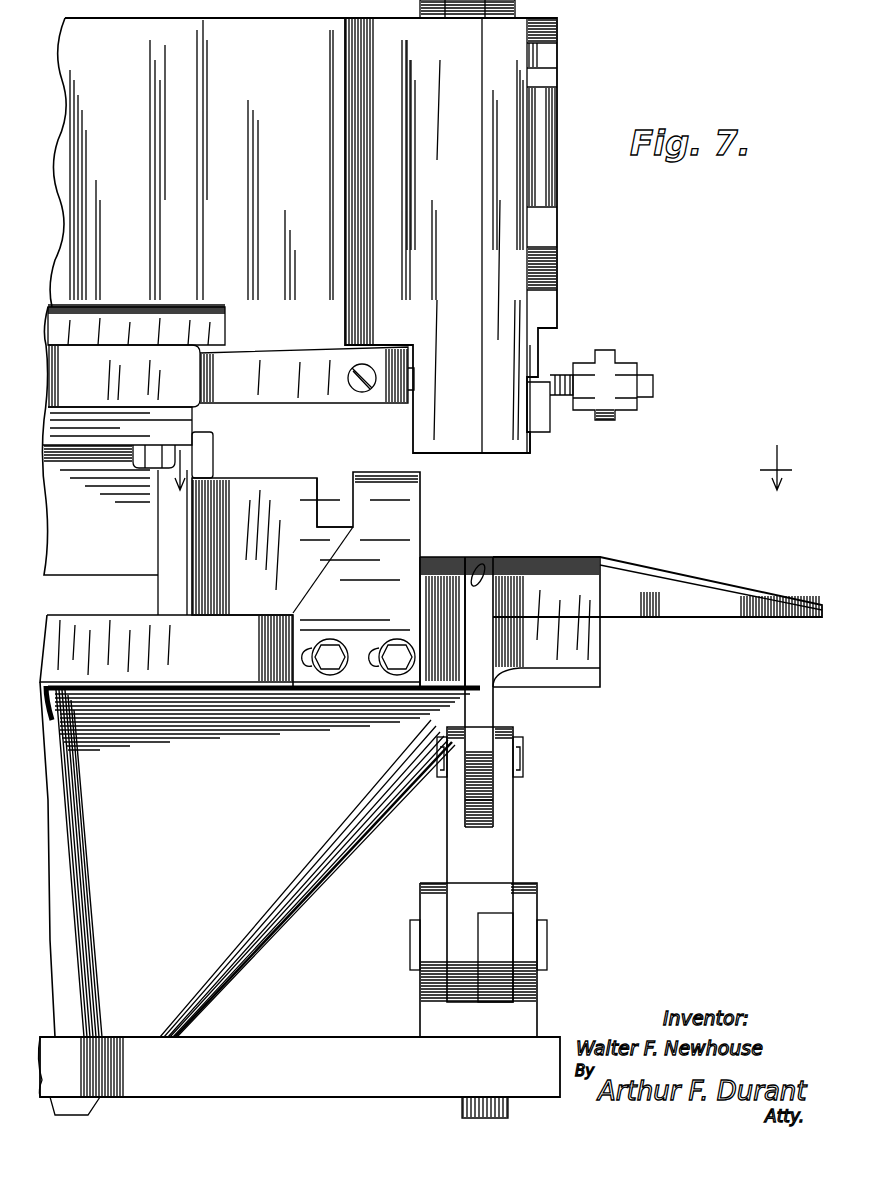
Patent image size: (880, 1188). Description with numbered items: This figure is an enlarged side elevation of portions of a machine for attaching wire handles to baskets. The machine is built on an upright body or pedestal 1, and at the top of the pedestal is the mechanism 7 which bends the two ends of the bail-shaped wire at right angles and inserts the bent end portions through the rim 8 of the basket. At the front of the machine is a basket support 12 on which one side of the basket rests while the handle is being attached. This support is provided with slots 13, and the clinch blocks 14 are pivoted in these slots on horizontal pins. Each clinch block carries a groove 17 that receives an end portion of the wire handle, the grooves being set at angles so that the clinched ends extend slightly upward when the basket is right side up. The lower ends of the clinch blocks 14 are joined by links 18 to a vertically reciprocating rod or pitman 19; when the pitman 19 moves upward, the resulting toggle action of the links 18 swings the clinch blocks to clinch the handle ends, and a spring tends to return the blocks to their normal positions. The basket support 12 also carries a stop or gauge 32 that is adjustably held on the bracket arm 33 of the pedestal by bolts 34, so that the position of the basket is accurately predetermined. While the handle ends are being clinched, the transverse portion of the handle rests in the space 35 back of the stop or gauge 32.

The upright body or pedestal 1 is at (63, 995).
The mechanism for bending the bail ends 7 is at (463, 273).
The rim of the basket 8 is at (487, 483).
The basket support 12 is at (625, 598).
The slots 13 is at (510, 556).
The clinch blocks 14 is at (480, 638).
The groove 17 is at (607, 522).
The links 18 is at (493, 845).
The vertically reciprocating rod or pitman 19 is at (478, 1103).
The stop or gauge 32 is at (337, 556).
The bracket arm 33 is at (230, 648).
The bolts 34 is at (328, 662).
The space back of the stop or gauge 35 is at (327, 508).